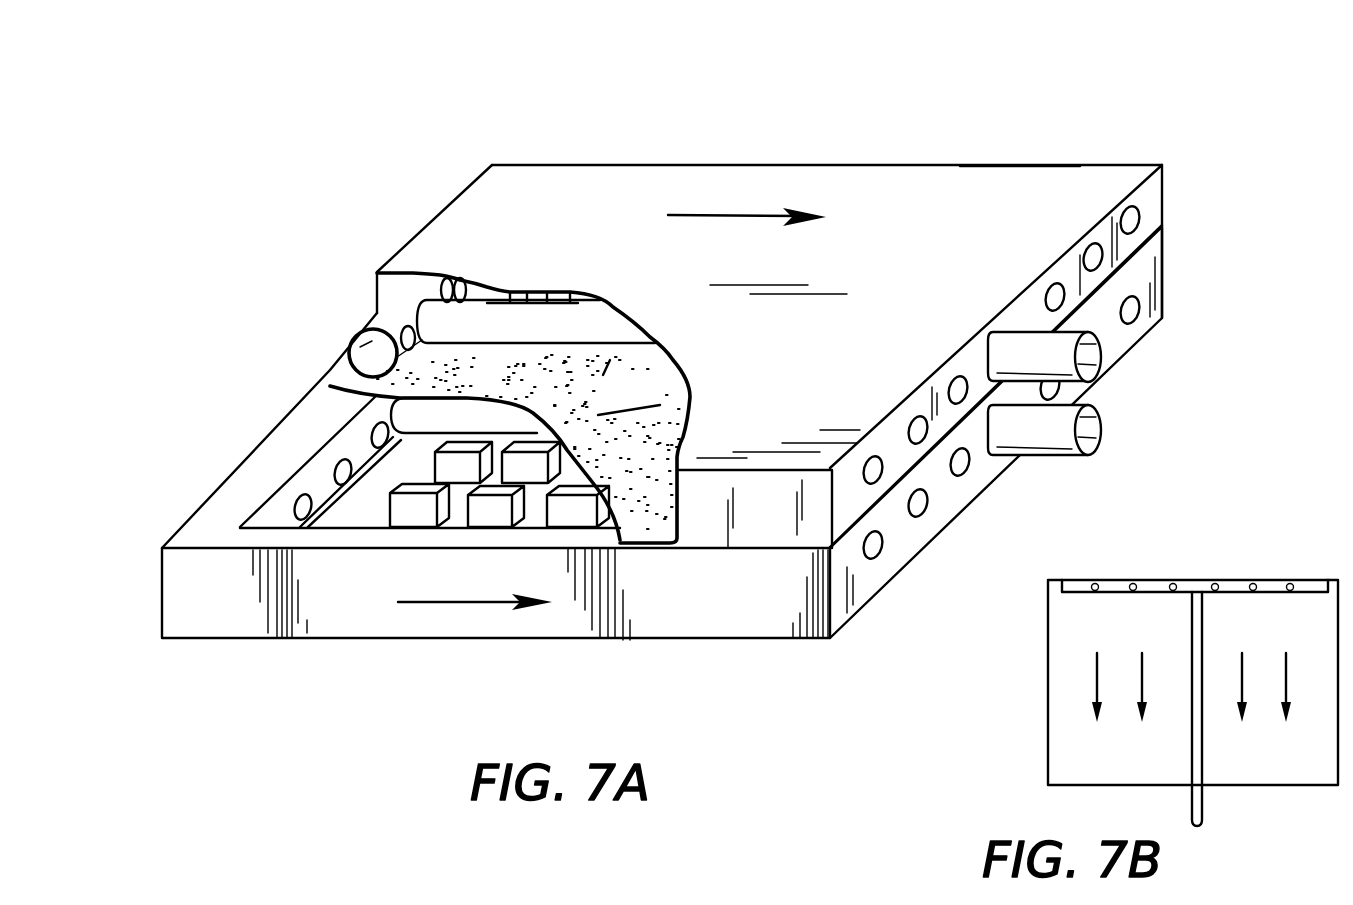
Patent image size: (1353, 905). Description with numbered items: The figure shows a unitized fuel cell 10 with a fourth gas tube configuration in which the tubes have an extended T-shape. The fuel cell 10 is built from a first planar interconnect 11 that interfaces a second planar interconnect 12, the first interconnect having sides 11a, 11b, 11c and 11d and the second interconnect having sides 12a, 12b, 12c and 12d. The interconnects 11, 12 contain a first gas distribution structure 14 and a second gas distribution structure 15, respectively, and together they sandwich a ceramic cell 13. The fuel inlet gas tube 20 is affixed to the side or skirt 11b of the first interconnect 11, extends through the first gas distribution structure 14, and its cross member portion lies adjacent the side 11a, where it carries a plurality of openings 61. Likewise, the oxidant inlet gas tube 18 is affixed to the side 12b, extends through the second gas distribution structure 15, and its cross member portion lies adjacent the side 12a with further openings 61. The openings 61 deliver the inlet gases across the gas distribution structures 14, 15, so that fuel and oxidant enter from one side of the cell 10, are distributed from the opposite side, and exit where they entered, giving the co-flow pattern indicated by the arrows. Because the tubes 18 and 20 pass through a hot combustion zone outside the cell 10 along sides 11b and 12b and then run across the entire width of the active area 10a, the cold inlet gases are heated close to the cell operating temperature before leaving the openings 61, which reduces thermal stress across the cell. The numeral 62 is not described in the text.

In FIG. 7A, the fuel cell 10 is at (1144, 84).
In FIG. 7A, the active area 10a is at (537, 513).
In FIG. 7B, the active area 10a is at (1146, 620).
In FIG. 7A, the first planar interconnect 11 is at (168, 606).
In FIG. 7A, the side of first interconnect 11a is at (178, 533).
In FIG. 7A, the side of first interconnect 11b is at (930, 530).
In FIG. 7A, the side of first interconnect 11c is at (728, 630).
In FIG. 7A, the side of first interconnect 11d is at (1019, 148).
In FIG. 7A, the second planar interconnect 12 is at (611, 160).
In FIG. 7A, the side of second interconnect 12a is at (413, 237).
In FIG. 7A, the side of second interconnect 12b is at (1017, 307).
In FIG. 7A, the side of second interconnect 12c is at (783, 533).
In FIG. 7A, the side of second interconnect 12d is at (863, 165).
In FIG. 7A, the ceramic cell 13 is at (345, 372).
In FIG. 7A, the first gas distribution structure 14 is at (397, 513).
In FIG. 7A, the second gas distribution structure 15 is at (487, 287).
In FIG. 7A, the oxidant inlet gas tube 18 is at (1103, 360).
In FIG. 7B, the oxidant inlet gas tube 18 is at (1197, 813).
In FIG. 7A, the fuel inlet gas tube 20 is at (1097, 455).
In FIG. 7A, the openings 61 is at (312, 495).
In FIG. 7A, the side face aperture 62 is at (1145, 215).